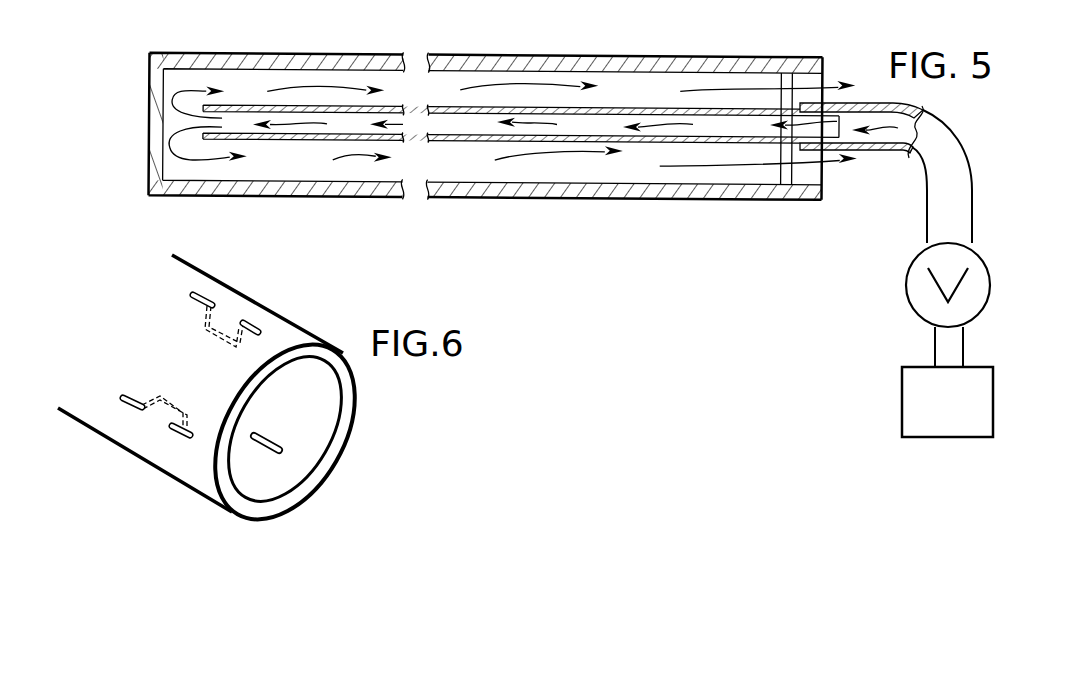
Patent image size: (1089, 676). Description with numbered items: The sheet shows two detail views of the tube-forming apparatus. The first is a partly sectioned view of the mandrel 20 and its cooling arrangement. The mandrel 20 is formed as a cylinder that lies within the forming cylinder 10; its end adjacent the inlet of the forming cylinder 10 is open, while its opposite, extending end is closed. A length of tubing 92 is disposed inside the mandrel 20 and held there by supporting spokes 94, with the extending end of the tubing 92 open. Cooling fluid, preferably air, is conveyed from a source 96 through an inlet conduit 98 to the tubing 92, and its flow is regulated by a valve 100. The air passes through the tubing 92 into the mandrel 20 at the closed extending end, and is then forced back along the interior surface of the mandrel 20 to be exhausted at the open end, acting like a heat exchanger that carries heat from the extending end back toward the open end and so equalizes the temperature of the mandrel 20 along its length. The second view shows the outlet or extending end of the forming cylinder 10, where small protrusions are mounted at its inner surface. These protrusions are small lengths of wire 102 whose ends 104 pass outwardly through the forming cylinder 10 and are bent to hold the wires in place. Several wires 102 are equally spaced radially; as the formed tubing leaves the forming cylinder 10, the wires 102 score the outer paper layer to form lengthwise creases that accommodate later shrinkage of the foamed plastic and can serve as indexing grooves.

In FIG. 6, the forming cylinder 10 is at (195, 268).
In FIG. 5, the mandrel 20 is at (766, 57).
In FIG. 5, the tubing 92 is at (673, 104).
In FIG. 5, the supporting spokes 94 is at (790, 73).
In FIG. 5, the source 96 is at (982, 407).
In FIG. 5, the inlet conduit 98 is at (962, 196).
In FIG. 5, the valve 100 is at (990, 284).
In FIG. 6, the wire 102 is at (172, 342).
In FIG. 6, the ends 104 is at (212, 297).